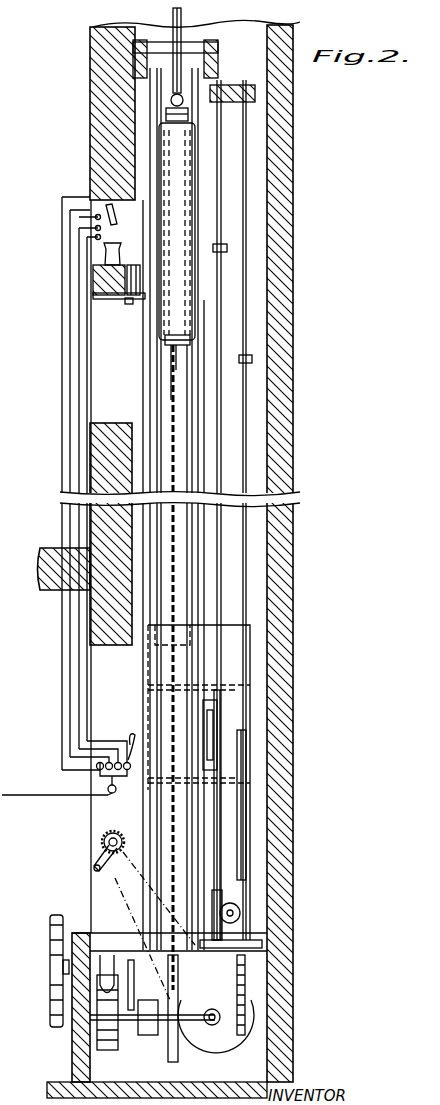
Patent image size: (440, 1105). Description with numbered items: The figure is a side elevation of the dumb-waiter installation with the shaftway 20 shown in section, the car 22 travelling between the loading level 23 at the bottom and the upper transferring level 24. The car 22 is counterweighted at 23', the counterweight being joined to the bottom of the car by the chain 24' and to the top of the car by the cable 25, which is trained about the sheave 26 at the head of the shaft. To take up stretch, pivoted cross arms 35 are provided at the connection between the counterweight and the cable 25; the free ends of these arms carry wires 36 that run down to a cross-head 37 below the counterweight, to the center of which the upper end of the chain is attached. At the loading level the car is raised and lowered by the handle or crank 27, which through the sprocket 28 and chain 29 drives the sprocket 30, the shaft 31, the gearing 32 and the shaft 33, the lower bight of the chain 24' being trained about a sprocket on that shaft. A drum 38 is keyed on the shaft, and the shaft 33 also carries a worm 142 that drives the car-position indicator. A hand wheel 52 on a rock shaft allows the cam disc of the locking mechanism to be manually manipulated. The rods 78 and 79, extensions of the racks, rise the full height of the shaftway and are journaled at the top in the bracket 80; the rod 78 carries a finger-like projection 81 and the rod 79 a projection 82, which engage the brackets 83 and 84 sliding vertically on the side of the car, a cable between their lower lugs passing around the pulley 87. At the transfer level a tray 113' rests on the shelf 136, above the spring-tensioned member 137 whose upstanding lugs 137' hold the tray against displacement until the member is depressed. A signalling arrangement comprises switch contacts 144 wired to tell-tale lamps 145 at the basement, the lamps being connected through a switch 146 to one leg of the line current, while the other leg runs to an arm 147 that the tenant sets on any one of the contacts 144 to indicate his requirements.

The shaftway 20 is at (258, 486).
The car 22 is at (232, 662).
The loading level 23 is at (144, 990).
The counterweight 23' is at (236, 509).
The transferring level 24 is at (58, 566).
The chain 24' is at (251, 667).
The cable 25 is at (170, 100).
The sheave 26 is at (172, 30).
The handle or crank 27 is at (96, 862).
The sprocket 28 is at (102, 836).
The chain 29 is at (111, 876).
The sprocket 30 is at (232, 1040).
The shaft 31 is at (228, 1040).
The gearing 32 is at (208, 1026).
The shaft 33 is at (155, 1035).
The pivoted cross arms 35 is at (190, 108).
The wire or cable 36 is at (170, 205).
The cross-head portion 37 is at (170, 350).
The drum 38 is at (107, 1040).
The hand wheel 52 is at (50, 998).
The rod 78 is at (247, 425).
The rod 79 is at (219, 462).
The bracket 80 is at (239, 85).
The finger-like projection 81 is at (252, 360).
The projection 82 is at (228, 248).
The bracket 83 is at (247, 873).
The bracket 84 is at (218, 723).
The pulley 87 is at (240, 921).
The tray 113' is at (72, 269).
The shelf 136 is at (100, 296).
The member 137 is at (118, 314).
The upstanding lugs 137' is at (139, 350).
The worm 142 is at (142, 1030).
The switch contacts 144 is at (95, 228).
The tell-tale lamps 145 is at (98, 746).
The switch 146 is at (112, 793).
The arm 147 is at (110, 222).